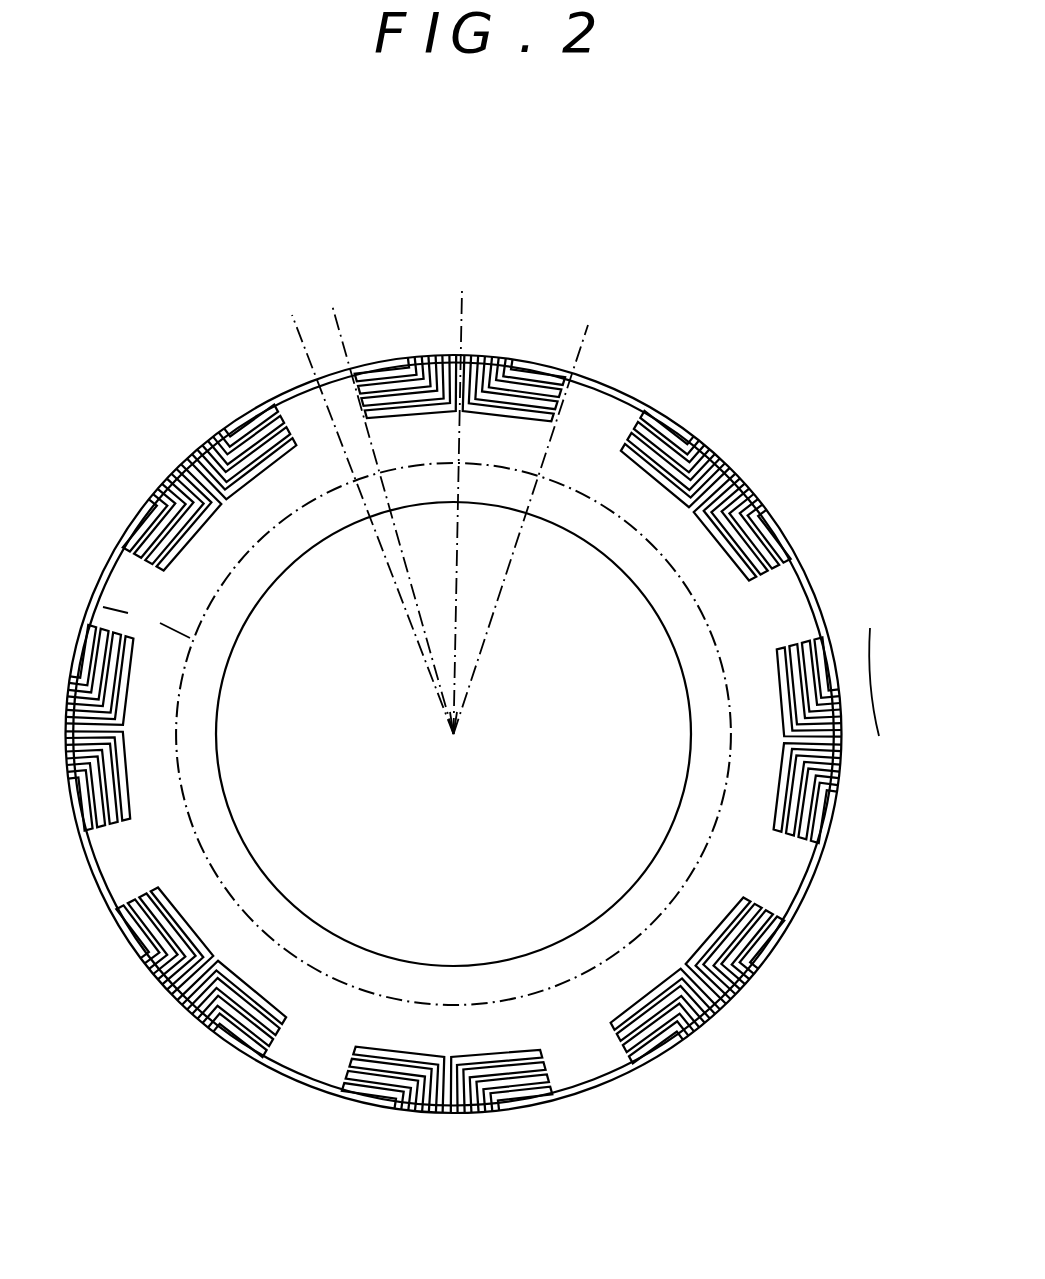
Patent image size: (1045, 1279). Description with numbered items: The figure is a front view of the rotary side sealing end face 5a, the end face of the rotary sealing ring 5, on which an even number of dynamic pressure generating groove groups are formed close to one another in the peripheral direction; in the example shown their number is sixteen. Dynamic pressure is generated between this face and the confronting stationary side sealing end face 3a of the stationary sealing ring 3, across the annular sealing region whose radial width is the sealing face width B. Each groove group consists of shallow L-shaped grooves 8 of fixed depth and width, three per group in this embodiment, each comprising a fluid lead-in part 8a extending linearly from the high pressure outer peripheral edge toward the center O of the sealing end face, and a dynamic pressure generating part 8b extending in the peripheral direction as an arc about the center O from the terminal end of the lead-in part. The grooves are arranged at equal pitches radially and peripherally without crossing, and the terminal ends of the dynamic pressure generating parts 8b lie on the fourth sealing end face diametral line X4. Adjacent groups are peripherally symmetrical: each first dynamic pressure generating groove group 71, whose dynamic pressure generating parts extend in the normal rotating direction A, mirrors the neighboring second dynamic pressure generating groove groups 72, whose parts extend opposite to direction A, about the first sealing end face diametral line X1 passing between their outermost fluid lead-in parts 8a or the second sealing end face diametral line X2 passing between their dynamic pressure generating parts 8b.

The stationary sealing ring 3 is at (282, 1067).
The stationary side sealing end face 3a is at (179, 784).
The rotary sealing ring 5 is at (330, 1094).
The rotary side sealing end face 5a is at (217, 746).
The first dynamic pressure generating groove group 71 is at (702, 940).
The second dynamic pressure generating groove group 72 is at (207, 940).
The L-shaped groove 8 is at (212, 587).
The fluid lead-in part 8a is at (760, 501).
The dynamic pressure generating part 8b is at (778, 573).
The normal rotating direction A is at (870, 626).
The sealing face width B is at (195, 640).
The center of the sealing end face O is at (452, 747).
The first sealing end face diametral line X1 is at (463, 308).
The second sealing end face diametral line X2 is at (300, 318).
The fourth sealing end face diametral line X4 is at (628, 310).